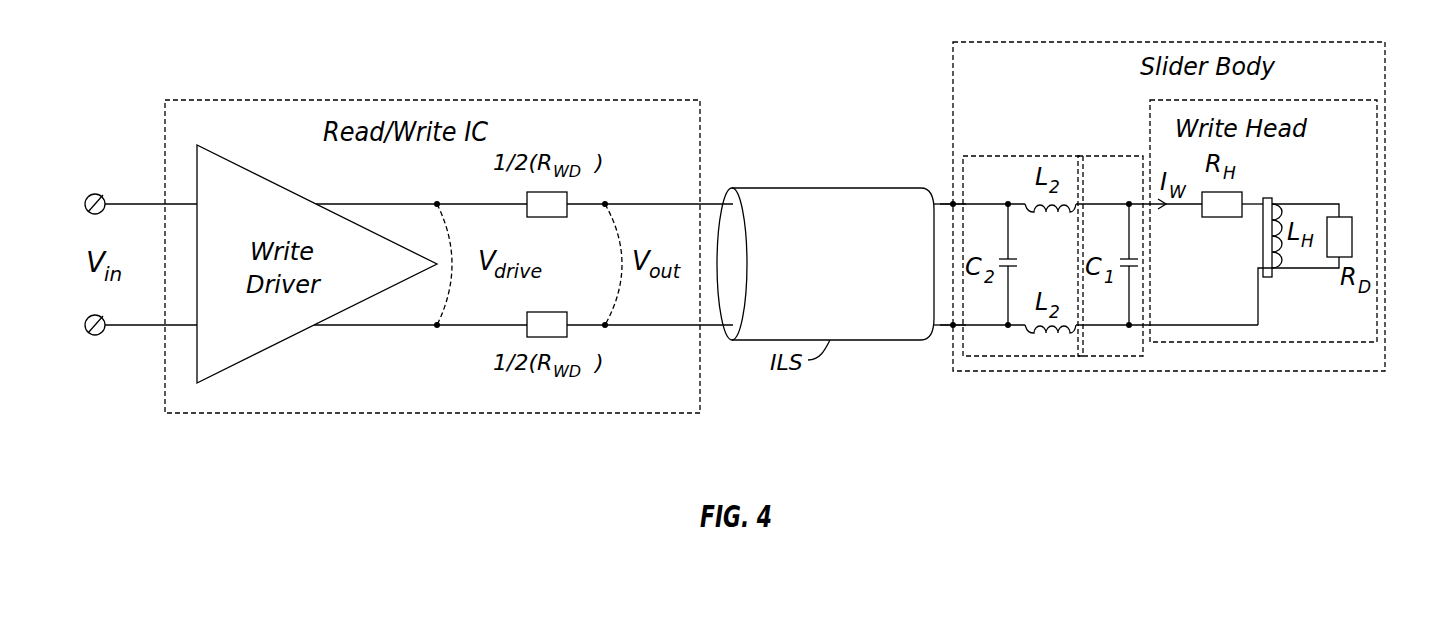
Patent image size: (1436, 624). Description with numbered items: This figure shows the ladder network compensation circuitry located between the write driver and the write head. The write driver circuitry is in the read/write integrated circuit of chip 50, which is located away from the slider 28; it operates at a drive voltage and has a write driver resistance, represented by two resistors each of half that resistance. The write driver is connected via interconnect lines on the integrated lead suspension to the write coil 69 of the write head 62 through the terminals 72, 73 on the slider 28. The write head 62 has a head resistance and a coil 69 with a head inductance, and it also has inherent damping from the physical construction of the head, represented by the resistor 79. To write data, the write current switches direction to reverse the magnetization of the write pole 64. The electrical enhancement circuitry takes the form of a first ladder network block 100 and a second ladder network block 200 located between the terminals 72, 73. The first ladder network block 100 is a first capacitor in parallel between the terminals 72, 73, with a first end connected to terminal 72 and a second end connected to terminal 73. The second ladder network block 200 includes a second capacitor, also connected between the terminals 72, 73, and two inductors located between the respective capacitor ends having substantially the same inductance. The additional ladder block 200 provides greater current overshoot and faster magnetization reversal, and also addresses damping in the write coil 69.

The slider 28 is at (1350, 42).
The chip 50 is at (690, 100).
The write head 62 is at (1282, 100).
The write pole 64 is at (1268, 277).
The coil 69 is at (1280, 212).
The terminal 72 is at (953, 204).
The terminal 73 is at (953, 325).
The resistor 79 is at (1352, 237).
The first ladder network block 100 is at (1113, 156).
The second ladder network block 200 is at (1027, 156).